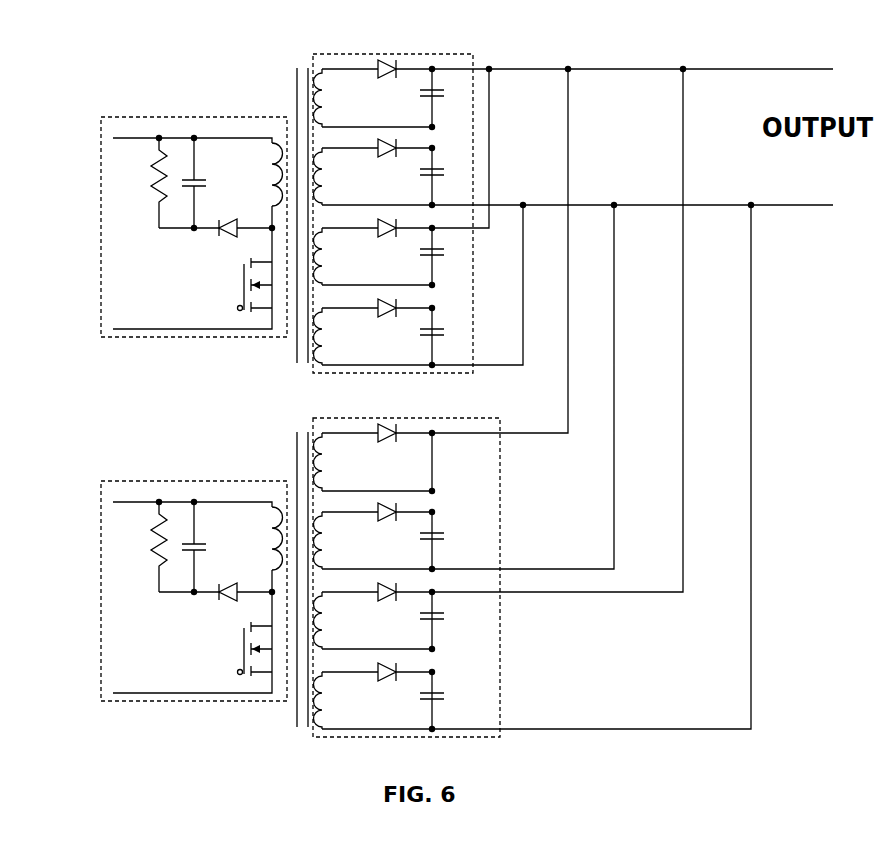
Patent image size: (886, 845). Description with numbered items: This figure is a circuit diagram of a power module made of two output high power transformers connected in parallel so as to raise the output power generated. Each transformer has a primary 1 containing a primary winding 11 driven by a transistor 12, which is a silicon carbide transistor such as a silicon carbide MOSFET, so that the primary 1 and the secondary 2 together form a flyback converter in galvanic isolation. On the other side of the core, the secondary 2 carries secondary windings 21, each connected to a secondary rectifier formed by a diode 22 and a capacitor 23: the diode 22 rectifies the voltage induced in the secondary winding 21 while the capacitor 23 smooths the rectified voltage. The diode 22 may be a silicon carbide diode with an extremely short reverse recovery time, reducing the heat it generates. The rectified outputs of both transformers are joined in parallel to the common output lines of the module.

The primary 1 is at (84, 208).
The primary winding 11 is at (284, 167).
The transistor 12 is at (243, 282).
The secondary 2 is at (484, 179).
The secondary winding 21 is at (322, 70).
The diode 22 is at (390, 61).
The capacitor 23 is at (445, 93).